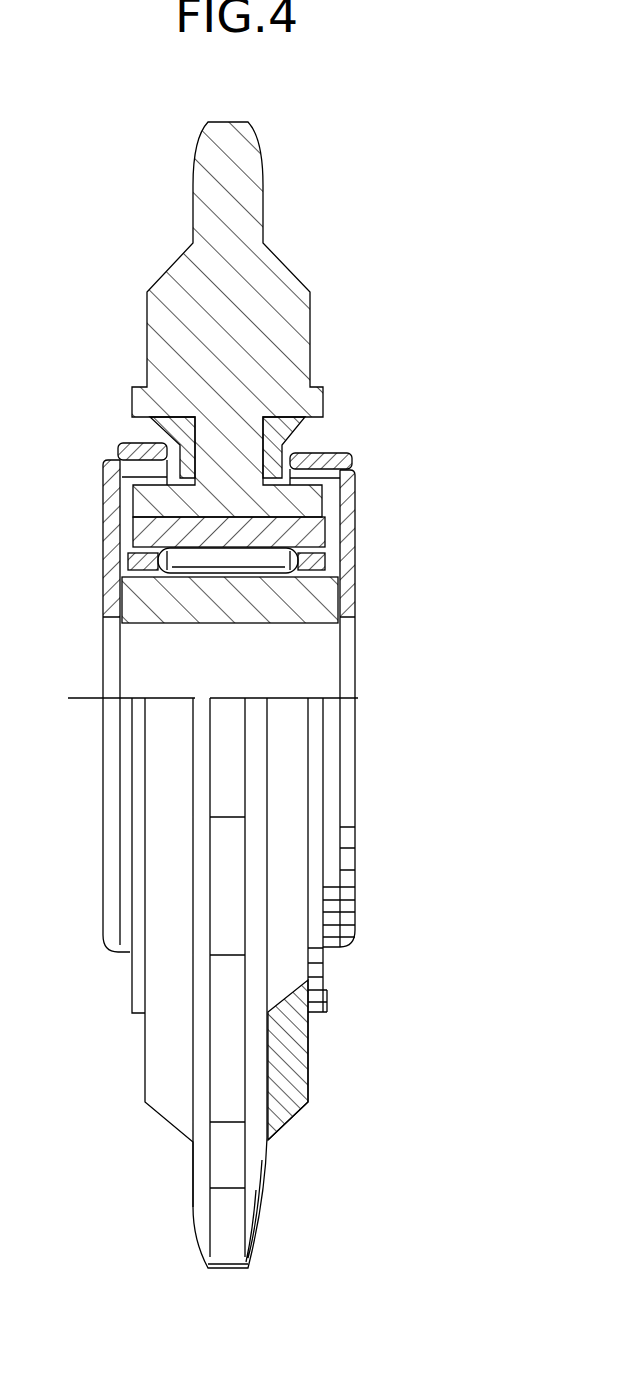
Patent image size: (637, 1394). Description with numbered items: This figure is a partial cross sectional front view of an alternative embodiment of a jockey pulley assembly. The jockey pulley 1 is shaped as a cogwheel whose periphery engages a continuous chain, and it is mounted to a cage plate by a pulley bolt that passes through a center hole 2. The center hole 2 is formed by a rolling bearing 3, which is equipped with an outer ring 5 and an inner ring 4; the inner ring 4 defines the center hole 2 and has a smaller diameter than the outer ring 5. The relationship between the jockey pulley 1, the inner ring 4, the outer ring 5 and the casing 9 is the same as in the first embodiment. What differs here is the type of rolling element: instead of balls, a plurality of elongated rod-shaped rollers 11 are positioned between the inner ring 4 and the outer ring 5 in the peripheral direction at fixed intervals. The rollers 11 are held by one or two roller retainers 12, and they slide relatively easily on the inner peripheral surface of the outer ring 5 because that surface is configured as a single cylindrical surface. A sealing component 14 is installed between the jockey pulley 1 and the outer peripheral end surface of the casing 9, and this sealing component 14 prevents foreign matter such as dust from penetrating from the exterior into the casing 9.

The jockey pulley 1 is at (213, 223).
The center hole 2 is at (247, 720).
The rolling bearing 3 is at (457, 507).
The inner ring 4 is at (318, 606).
The outer ring 5 is at (318, 523).
The casing 9 is at (357, 665).
The rollers 11 is at (300, 575).
The roller retainer 12 is at (130, 563).
The sealing component 14 is at (310, 440).